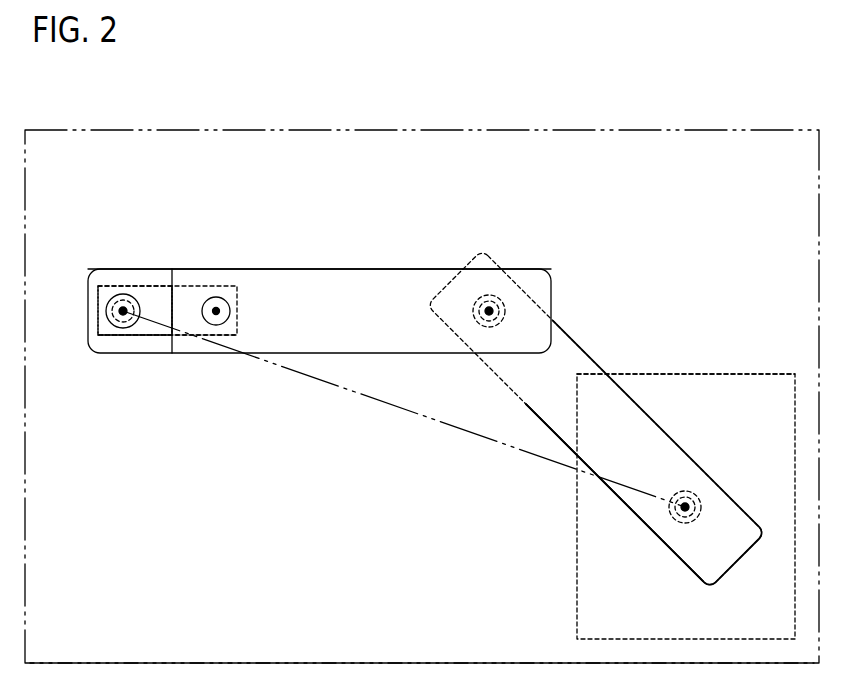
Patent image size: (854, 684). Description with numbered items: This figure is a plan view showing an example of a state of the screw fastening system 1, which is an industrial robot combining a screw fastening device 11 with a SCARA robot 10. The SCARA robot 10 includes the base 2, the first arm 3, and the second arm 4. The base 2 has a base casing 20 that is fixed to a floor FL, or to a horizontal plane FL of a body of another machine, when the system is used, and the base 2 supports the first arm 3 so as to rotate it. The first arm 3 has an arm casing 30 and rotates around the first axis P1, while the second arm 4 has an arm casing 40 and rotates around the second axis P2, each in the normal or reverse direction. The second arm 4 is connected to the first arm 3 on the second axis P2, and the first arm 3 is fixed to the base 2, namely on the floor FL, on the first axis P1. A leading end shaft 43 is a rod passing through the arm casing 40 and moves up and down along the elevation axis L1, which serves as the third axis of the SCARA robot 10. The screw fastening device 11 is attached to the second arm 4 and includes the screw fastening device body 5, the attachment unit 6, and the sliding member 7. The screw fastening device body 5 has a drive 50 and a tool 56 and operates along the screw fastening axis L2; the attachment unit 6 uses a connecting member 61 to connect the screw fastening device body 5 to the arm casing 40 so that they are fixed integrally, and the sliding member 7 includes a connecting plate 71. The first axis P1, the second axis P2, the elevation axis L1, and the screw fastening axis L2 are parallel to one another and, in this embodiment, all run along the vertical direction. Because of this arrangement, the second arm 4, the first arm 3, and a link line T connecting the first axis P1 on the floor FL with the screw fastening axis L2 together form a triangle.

The screw fastening system 1 is at (445, 99).
The base 2 is at (699, 374).
The base casing 20 is at (757, 390).
The first arm 3 is at (577, 330).
The arm casing 30 is at (580, 362).
The second arm 4 is at (356, 269).
The arm casing 40 is at (400, 282).
The leading end shaft 43 is at (216, 296).
The screw fastening device body 5 is at (125, 294).
The drive 50 is at (113, 310).
The tool 56 is at (116, 319).
The attachment unit 6 is at (142, 269).
The connecting member 61 is at (155, 278).
The sliding member 7 is at (142, 338).
The connecting plate 71 is at (165, 324).
The SCARA robot 10 is at (453, 232).
The screw fastening device 11 is at (112, 209).
The elevation axis L1 is at (216, 312).
The screw fastening axis L2 is at (124, 312).
The first axis P1 is at (685, 505).
The second axis P2 is at (489, 309).
The link line T is at (385, 402).
The floor FL is at (336, 633).